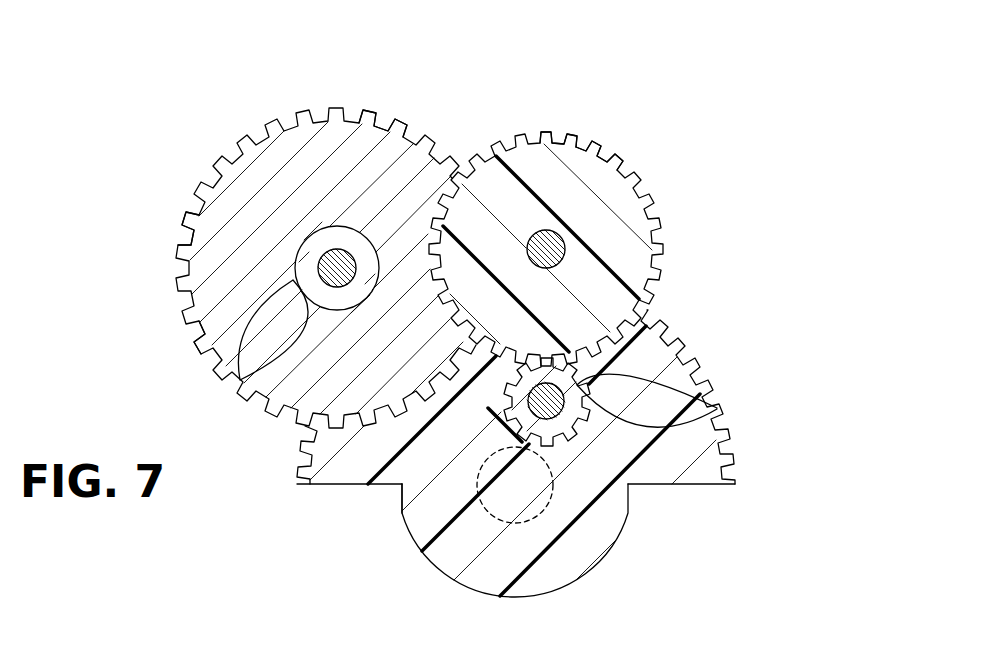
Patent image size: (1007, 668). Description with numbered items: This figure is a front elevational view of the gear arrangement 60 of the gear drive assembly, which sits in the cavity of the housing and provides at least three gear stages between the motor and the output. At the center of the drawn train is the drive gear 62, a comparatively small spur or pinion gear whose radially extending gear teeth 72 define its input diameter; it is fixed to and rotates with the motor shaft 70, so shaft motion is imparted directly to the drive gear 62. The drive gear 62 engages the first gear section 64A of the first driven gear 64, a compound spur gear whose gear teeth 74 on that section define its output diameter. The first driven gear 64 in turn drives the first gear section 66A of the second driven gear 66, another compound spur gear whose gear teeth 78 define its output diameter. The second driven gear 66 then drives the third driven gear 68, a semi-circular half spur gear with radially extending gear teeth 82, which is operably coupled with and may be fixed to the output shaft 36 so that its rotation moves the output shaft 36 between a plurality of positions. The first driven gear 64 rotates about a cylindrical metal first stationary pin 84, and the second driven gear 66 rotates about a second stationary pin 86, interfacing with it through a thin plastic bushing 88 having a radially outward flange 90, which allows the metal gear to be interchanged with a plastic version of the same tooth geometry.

The gear arrangement 60 is at (766, 87).
The drive gear 62 is at (580, 417).
The first driven gear 64 is at (662, 211).
The first gear section of the first driven gear 64A is at (583, 167).
The second driven gear 66 is at (301, 110).
The first gear section of the second driven gear 66A is at (177, 248).
The third driven gear 68 is at (683, 387).
The shaft 70 is at (545, 415).
The gear teeth 72 is at (717, 408).
The gear teeth 74 is at (570, 128).
The gear teeth 78 is at (395, 122).
The gear teeth 82 is at (665, 326).
The first stationary pin 84 is at (558, 246).
The second stationary pin 86 is at (323, 257).
The plastic bushing 88 is at (240, 378).
The flange 90 is at (217, 354).
The output shaft 36 is at (552, 518).